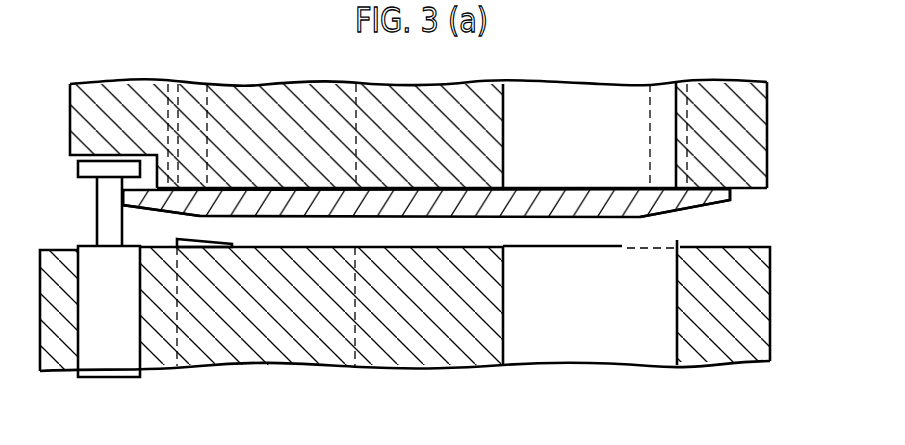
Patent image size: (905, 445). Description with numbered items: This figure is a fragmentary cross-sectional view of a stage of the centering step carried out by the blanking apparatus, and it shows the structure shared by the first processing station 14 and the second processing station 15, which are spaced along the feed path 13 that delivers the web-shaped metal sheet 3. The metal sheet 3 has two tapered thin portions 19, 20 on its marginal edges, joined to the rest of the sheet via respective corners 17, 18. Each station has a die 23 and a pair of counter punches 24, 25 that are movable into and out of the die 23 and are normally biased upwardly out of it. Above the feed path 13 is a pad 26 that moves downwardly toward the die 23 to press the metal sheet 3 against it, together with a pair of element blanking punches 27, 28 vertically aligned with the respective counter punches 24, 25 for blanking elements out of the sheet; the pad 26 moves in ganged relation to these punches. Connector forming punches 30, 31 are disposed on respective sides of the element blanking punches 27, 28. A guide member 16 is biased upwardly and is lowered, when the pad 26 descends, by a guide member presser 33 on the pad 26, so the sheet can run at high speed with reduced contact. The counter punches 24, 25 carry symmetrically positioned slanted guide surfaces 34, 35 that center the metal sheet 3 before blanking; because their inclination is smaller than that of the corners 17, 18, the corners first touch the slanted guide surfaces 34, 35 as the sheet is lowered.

The web-shaped metal sheet 3 is at (735, 192).
The feed path 13 is at (426, 235).
The first processing station 14 is at (692, 66).
The second processing station 15 is at (153, 72).
The guide member 16 is at (108, 208).
The corner 17 is at (645, 218).
The corner 18 is at (207, 188).
The thin portion 19 is at (715, 204).
The thin portion 20 is at (175, 215).
The die 23 is at (457, 327).
The counter punch 24 is at (603, 327).
The counter punch 25 is at (283, 320).
The pad 26 is at (430, 107).
The element blanking punch 27 is at (575, 118).
The element blanking punch 28 is at (307, 105).
The connector forming punch 30 is at (662, 107).
The connector forming punch 31 is at (177, 86).
The guide member presser 33 is at (75, 122).
The slanted guide surface 34 is at (650, 240).
The slanted guide surface 35 is at (185, 247).